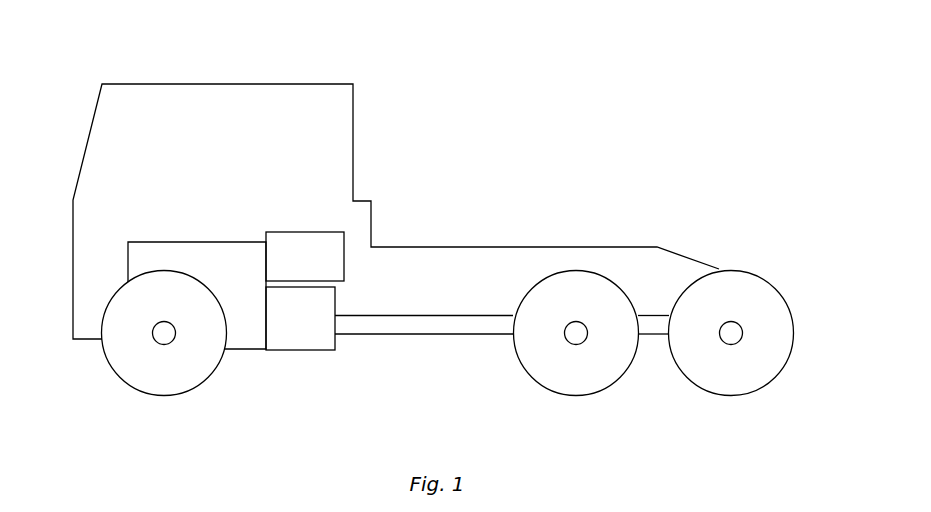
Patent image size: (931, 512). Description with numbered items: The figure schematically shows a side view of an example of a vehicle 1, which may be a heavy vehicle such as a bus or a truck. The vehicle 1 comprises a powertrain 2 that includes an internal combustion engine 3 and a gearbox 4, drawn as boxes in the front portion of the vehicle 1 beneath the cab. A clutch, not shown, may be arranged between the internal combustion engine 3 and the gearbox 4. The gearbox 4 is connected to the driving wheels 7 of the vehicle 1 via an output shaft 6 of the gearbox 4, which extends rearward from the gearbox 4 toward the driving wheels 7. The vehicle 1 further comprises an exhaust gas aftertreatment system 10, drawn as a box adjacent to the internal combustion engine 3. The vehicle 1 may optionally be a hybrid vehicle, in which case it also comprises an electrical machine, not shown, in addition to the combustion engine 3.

The vehicle 1 is at (518, 141).
The powertrain 2 is at (371, 363).
The internal combustion engine 3 is at (217, 258).
The gearbox 4 is at (293, 340).
The output shaft 6 is at (445, 323).
The driving wheels 7 is at (595, 378).
The exhaust gas aftertreatment system 10 is at (293, 250).